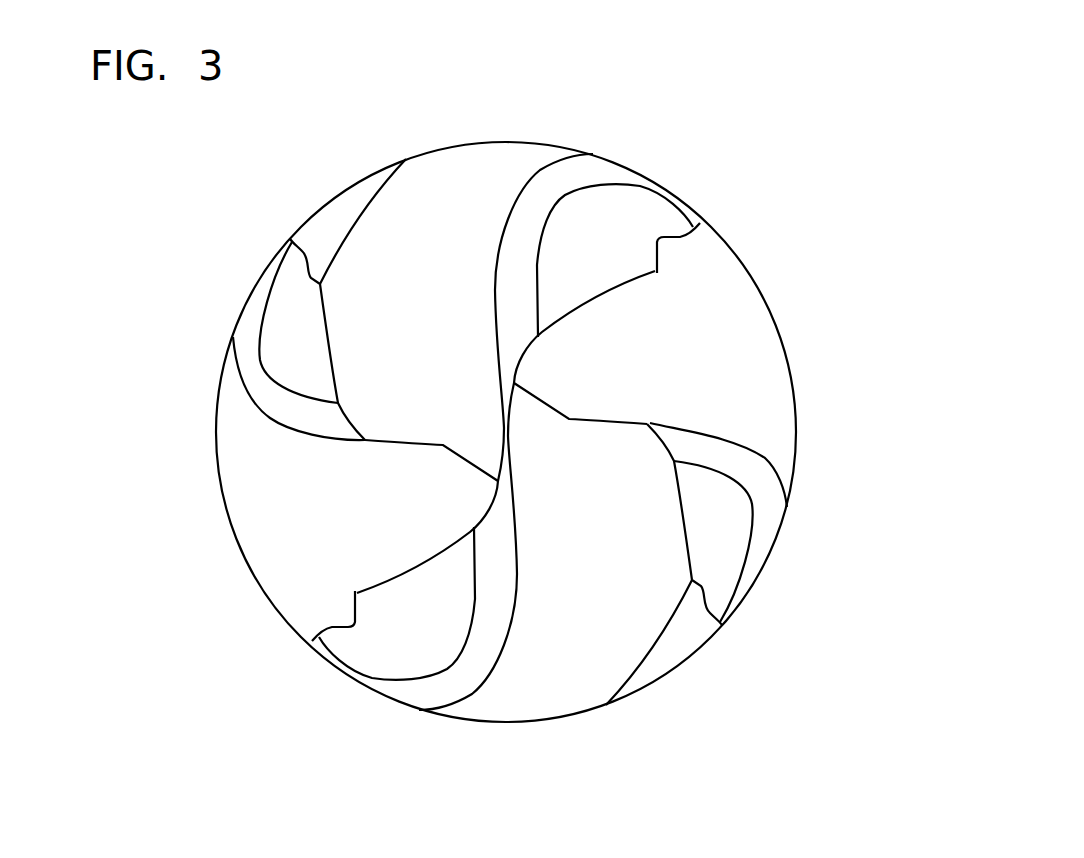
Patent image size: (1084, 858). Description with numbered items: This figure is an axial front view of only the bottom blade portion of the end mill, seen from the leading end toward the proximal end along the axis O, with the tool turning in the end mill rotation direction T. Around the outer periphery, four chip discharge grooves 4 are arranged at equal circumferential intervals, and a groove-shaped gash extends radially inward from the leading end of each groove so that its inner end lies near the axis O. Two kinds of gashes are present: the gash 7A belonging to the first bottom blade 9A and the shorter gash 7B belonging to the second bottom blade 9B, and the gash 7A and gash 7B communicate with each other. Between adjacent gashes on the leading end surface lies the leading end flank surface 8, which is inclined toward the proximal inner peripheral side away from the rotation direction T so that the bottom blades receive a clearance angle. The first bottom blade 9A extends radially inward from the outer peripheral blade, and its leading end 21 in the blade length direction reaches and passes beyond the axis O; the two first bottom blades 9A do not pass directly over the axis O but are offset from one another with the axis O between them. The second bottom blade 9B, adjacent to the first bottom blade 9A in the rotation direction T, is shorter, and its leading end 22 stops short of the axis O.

The chip discharge groove 4 is at (328, 237).
The gash of the first bottom blade 7A is at (408, 328).
The gash of the second bottom blade 7B is at (328, 513).
The leading end flank surface 8 is at (260, 372).
The first bottom blade 9A is at (492, 287).
The second bottom blade 9B is at (287, 428).
The leading end of the first bottom blade 21 is at (498, 481).
The leading end of the second bottom blade 22 is at (365, 440).
The axis O is at (518, 428).
The end mill rotation direction T is at (927, 570).